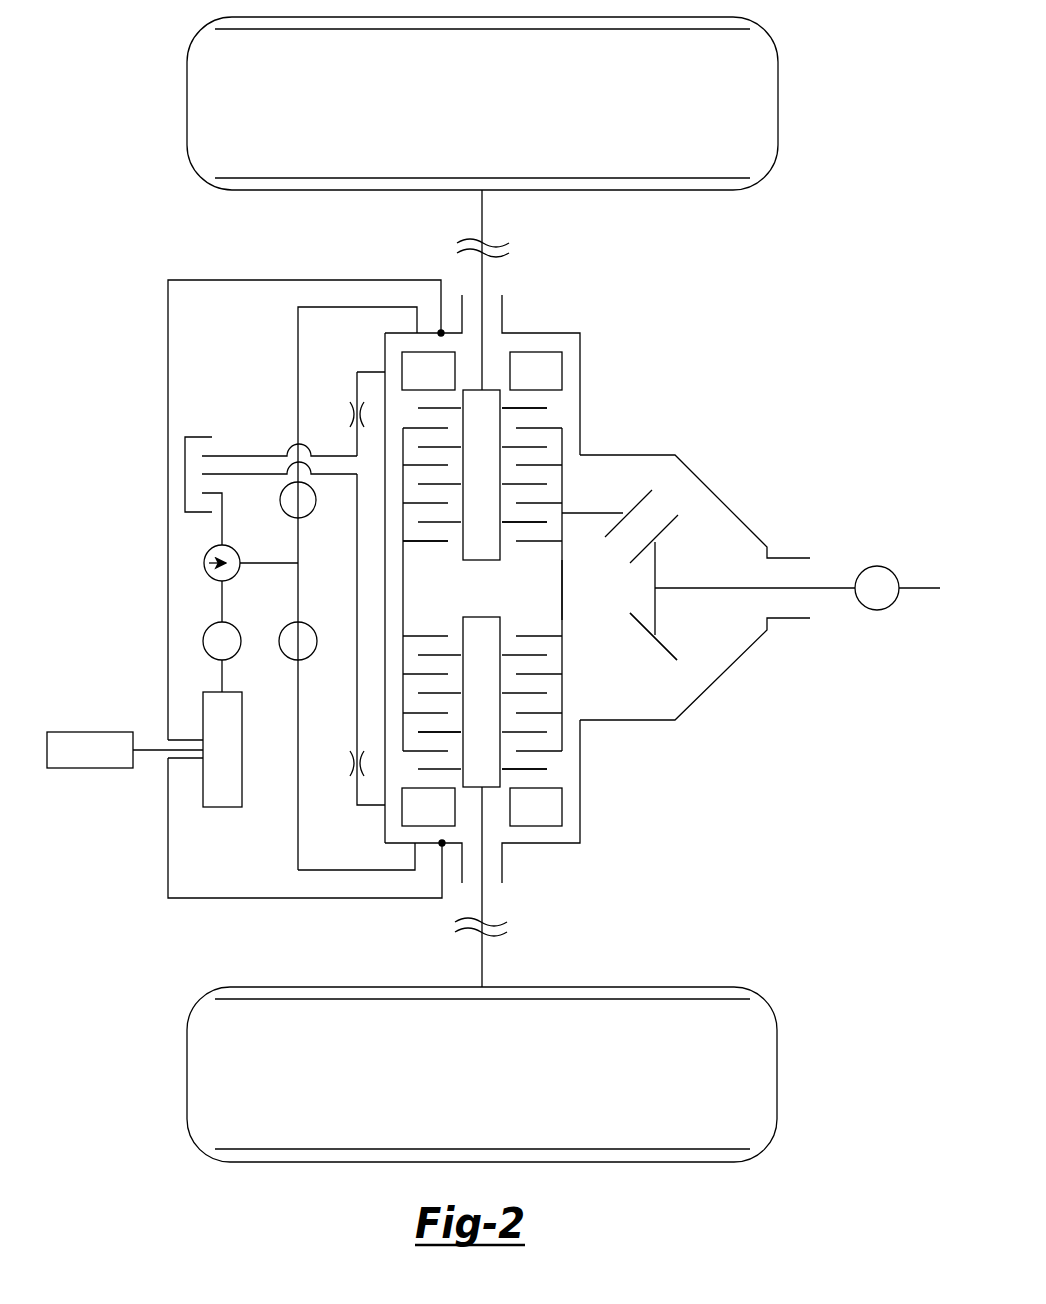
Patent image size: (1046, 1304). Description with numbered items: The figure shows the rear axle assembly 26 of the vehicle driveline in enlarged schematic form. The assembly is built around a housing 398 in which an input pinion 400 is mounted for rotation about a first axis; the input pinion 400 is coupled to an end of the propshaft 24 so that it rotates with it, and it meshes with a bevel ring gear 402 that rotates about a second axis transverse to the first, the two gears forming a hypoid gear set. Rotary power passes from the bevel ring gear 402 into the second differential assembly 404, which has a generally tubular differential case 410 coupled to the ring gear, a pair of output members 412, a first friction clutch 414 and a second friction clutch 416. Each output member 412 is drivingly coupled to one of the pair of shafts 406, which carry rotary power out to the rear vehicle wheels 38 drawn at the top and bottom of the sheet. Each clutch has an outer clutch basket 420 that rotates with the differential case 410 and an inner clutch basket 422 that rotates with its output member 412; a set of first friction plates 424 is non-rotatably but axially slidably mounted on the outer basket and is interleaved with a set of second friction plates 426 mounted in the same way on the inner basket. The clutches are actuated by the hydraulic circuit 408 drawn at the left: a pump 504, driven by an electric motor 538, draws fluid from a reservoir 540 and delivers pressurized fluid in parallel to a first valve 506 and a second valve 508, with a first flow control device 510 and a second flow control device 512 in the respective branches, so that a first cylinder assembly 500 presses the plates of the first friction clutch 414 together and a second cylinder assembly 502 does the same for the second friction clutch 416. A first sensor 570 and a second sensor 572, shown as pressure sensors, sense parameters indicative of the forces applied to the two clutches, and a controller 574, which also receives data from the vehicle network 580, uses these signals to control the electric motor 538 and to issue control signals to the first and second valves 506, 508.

The rear vehicle wheels 38 is at (187, 100).
The shafts 406 is at (483, 215).
The rear axle assembly 26 is at (718, 380).
The first cylinder assembly 500 is at (566, 327).
The second cylinder assembly 502 is at (566, 846).
The inner clutch basket 422 is at (464, 550).
The outer clutch basket 420 is at (563, 436).
The first friction clutch 414 is at (563, 473).
The second friction clutch 416 is at (563, 703).
The first friction plates 424 is at (430, 545).
The second friction plates 426 is at (545, 524).
The output members 412 is at (503, 404).
The differential case 410 is at (562, 605).
The second differential assembly 404 is at (573, 611).
The bevel ring gear 402 is at (652, 505).
The housing 398 is at (748, 652).
The input pinion 400 is at (662, 652).
The propshaft 24 is at (920, 586).
The first sensor 570 is at (441, 330).
The second sensor 572 is at (442, 846).
The hydraulic circuit 408 is at (212, 602).
The first valve 506 is at (316, 501).
The second valve 508 is at (345, 600).
The first flow control device 510 is at (351, 414).
The second flow control device 512 is at (351, 764).
The reservoir 540 is at (200, 437).
The pump 504 is at (205, 563).
The electric motor 538 is at (203, 641).
The controller 574 is at (222, 807).
The vehicle network 580 is at (62, 768).